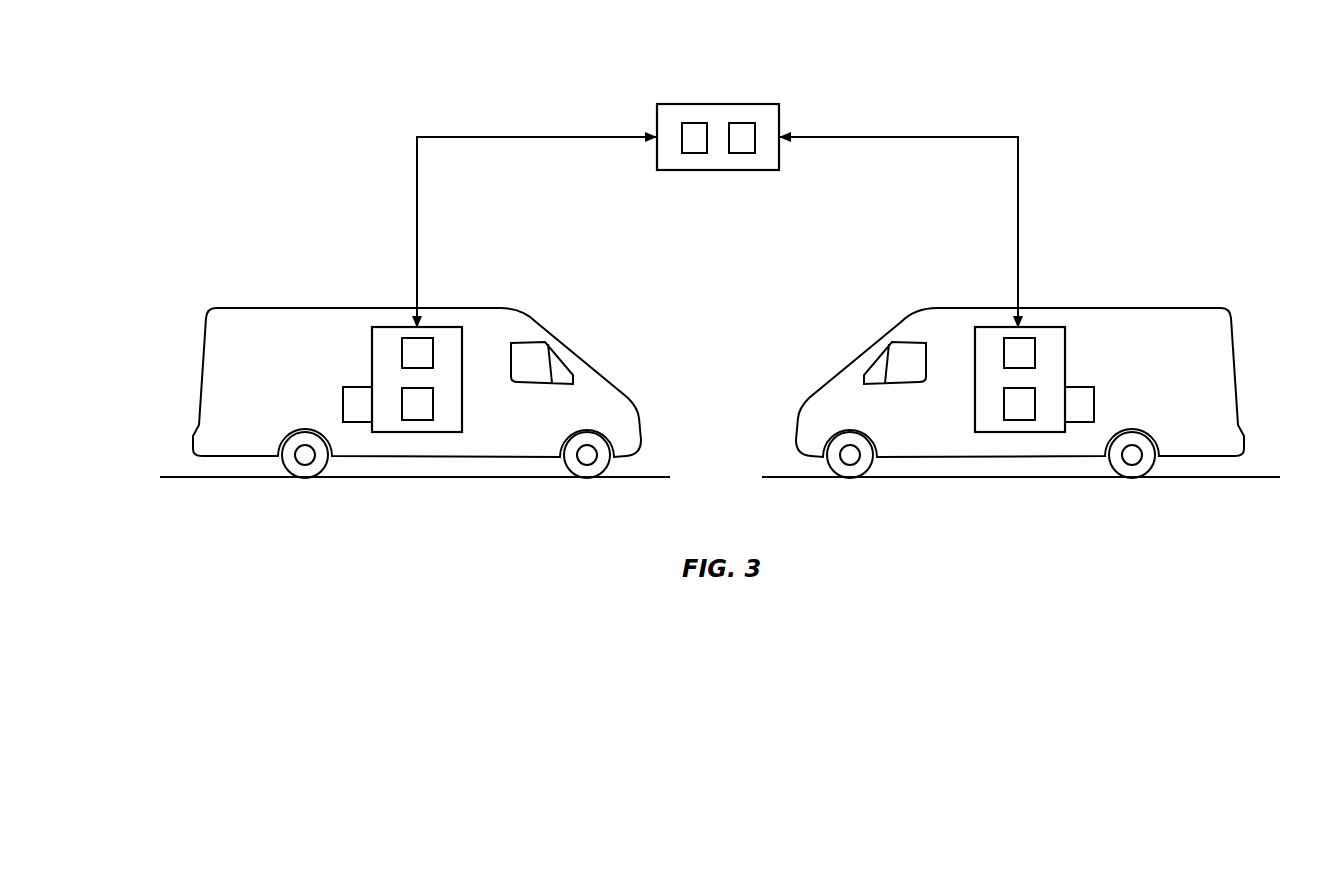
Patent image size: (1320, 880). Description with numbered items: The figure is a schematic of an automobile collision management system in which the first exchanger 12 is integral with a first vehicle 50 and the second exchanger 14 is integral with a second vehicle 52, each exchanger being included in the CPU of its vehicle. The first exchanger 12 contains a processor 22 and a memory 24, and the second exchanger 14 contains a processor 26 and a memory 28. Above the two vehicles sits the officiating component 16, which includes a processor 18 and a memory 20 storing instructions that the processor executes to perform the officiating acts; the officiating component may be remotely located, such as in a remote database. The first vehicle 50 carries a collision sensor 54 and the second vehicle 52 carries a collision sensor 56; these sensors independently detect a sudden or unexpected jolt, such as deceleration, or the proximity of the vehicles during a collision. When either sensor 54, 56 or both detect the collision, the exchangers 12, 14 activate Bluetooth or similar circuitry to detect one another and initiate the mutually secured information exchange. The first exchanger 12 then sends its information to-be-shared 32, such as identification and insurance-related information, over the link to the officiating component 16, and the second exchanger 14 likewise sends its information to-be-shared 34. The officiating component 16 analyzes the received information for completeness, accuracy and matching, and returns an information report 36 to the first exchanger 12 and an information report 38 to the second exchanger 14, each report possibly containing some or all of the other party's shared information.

The first exchanger 12 is at (417, 394).
The second exchanger 14 is at (1020, 394).
The officiating component 16 is at (731, 66).
The processor 18 is at (693, 123).
The memory 20 is at (742, 123).
The processor 22 is at (433, 353).
The memory 24 is at (433, 403).
The processor 26 is at (1004, 353).
The memory 28 is at (1004, 403).
The information to-be-shared 32 is at (534, 221).
The information to-be-shared 34 is at (901, 220).
The information report 36 is at (537, 137).
The information report 38 is at (899, 137).
The first vehicle 50 is at (567, 352).
The second vehicle 52 is at (870, 352).
The collision sensor 54 is at (343, 403).
The collision sensor 56 is at (1094, 403).